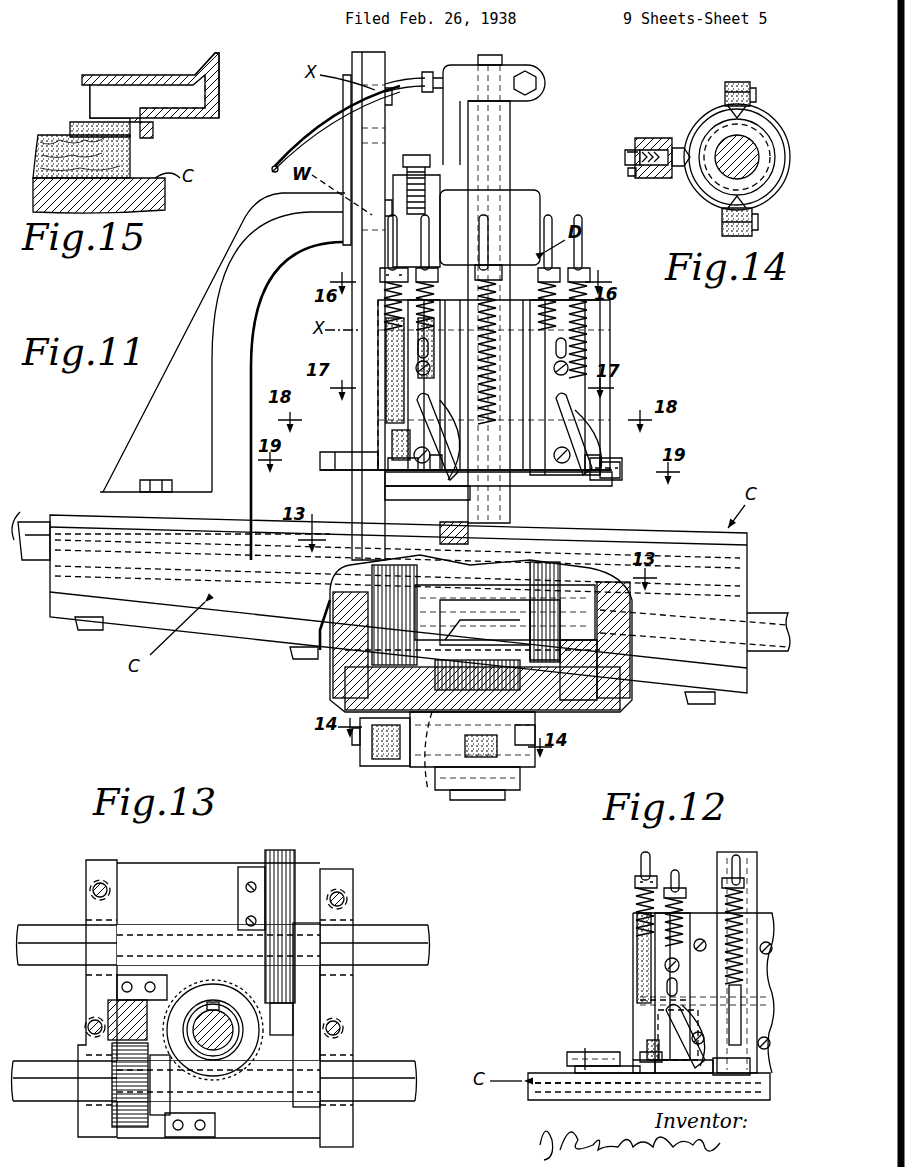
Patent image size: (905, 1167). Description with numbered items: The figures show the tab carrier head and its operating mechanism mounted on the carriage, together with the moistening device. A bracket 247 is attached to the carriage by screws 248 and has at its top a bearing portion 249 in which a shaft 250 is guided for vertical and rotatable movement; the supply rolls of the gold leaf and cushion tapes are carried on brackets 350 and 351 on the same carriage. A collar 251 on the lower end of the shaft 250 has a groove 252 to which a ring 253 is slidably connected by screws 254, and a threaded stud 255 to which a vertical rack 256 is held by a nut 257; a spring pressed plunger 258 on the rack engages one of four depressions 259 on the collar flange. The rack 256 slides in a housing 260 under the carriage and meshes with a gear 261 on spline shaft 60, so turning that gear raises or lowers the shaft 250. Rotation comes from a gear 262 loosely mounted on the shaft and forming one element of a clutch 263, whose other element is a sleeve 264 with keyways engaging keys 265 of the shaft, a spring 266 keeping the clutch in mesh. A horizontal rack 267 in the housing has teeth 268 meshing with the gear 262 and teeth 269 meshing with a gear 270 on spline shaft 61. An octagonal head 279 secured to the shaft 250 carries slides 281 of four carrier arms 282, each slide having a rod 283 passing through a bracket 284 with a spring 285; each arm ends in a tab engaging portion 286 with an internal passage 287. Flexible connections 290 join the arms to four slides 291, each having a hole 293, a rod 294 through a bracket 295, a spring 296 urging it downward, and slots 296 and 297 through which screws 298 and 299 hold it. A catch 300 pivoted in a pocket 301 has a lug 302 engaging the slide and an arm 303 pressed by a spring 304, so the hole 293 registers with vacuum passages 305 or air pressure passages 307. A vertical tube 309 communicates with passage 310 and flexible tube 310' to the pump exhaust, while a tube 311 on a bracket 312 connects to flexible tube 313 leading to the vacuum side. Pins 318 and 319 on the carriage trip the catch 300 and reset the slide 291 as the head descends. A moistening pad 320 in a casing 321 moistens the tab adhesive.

In FIG. 11, the spline shaft 60 is at (770, 632).
In FIG. 13, the spline shaft 60 is at (382, 1080).
In FIG. 13, the spline shaft 61 is at (388, 946).
In FIG. 11, the bracket 247 is at (165, 400).
In FIG. 11, the screws 248 is at (170, 465).
In FIG. 11, the bearing portion 249 is at (526, 215).
In FIG. 14, the shaft 250 is at (742, 152).
In FIG. 11, the shaft 250 is at (508, 172).
In FIG. 13, the shaft 250 is at (216, 1052).
In FIG. 12, the shaft 250 is at (768, 850).
In FIG. 14, the collar 251 is at (718, 122).
In FIG. 11, the collar 251 is at (510, 778).
In FIG. 11, the groove 252 is at (535, 745).
In FIG. 14, the ring 253 is at (767, 205).
In FIG. 11, the ring 253 is at (455, 790).
In FIG. 14, the screws 254 is at (756, 96).
In FIG. 11, the screws 254 is at (490, 758).
In FIG. 14, the threaded stud 255 is at (625, 158).
In FIG. 11, the threaded stud 255 is at (362, 745).
In FIG. 14, the rack 256 is at (665, 176).
In FIG. 11, the rack 256 is at (392, 766).
In FIG. 13, the rack 256 is at (110, 1015).
In FIG. 14, the nut 257 is at (633, 175).
In FIG. 11, the nut 257 is at (360, 760).
In FIG. 14, the spring pressed plunger 258 is at (688, 148).
In FIG. 11, the spring pressed plunger 258 is at (415, 755).
In FIG. 14, the grooves or depressions 259 is at (735, 110).
In FIG. 11, the grooves or depressions 259 is at (425, 785).
In FIG. 11, the housing 260 is at (335, 660).
In FIG. 13, the housing 260 is at (92, 912).
In FIG. 11, the gear 261 is at (330, 640).
In FIG. 13, the gear 261 is at (128, 1060).
In FIG. 11, the gear 262 is at (590, 718).
In FIG. 13, the gear 262 is at (240, 990).
In FIG. 11, the clutch 263 is at (600, 696).
In FIG. 11, the sleeve 264 is at (612, 655).
In FIG. 11, the keys 265 is at (500, 565).
In FIG. 13, the keys 265 is at (207, 1005).
In FIG. 11, the spring 266 is at (612, 640).
In FIG. 11, the rack 267 is at (597, 708).
In FIG. 13, the rack 267 is at (270, 870).
In FIG. 11, the teeth 268 is at (592, 685).
In FIG. 13, the teeth 268 is at (278, 1020).
In FIG. 11, the teeth 269 is at (612, 672).
In FIG. 13, the teeth 269 is at (298, 882).
In FIG. 13, the gear 270 is at (265, 920).
In FIG. 11, the octagonal head 279 is at (590, 355).
In FIG. 12, the octagonal head 279 is at (774, 914).
In FIG. 11, the slides 281 is at (518, 476).
In FIG. 15, the carrier arms 282 is at (207, 62).
In FIG. 11, the carrier arms 282 is at (610, 466).
In FIG. 12, the carrier arms 282 is at (610, 1052).
In FIG. 11, the vertical rod 283 is at (488, 262).
In FIG. 12, the vertical rod 283 is at (640, 863).
In FIG. 11, the bracket 284 is at (498, 275).
In FIG. 12, the bracket 284 is at (636, 882).
In FIG. 11, the spring 285 is at (498, 302).
In FIG. 12, the spring 285 is at (640, 900).
In FIG. 15, the tab engaging portion 286 is at (110, 78).
In FIG. 11, the tab engaging portion 286 is at (625, 482).
In FIG. 12, the tab engaging portion 286 is at (568, 1058).
In FIG. 15, the passage 287 is at (175, 92).
In FIG. 11, the flexible connections 290 is at (602, 490).
In FIG. 11, the slides 291 is at (415, 345).
In FIG. 12, the slides 291 is at (662, 958).
In FIG. 11, the hole 293 is at (434, 388).
In FIG. 12, the hole 293 is at (668, 1015).
In FIG. 11, the rod 294 is at (424, 268).
In FIG. 12, the rod 294 is at (675, 868).
In FIG. 11, the bracket 295 is at (436, 275).
In FIG. 12, the bracket 295 is at (685, 880).
In FIG. 11, the spring 296 is at (410, 348).
In FIG. 12, the spring 296 is at (645, 927).
In FIG. 11, the slot 297 is at (395, 432).
In FIG. 11, the screw 298 is at (432, 360).
In FIG. 12, the screw 298 is at (665, 965).
In FIG. 11, the screw 299 is at (432, 425).
In FIG. 12, the screw 299 is at (690, 1040).
In FIG. 11, the catch 300 is at (420, 468).
In FIG. 11, the pocket 301 is at (390, 470).
In FIG. 11, the lug 302 is at (435, 468).
In FIG. 11, the arm 303 is at (400, 475).
In FIG. 12, the arm 303 is at (655, 1062).
In FIG. 11, the spring 304 is at (395, 446).
In FIG. 12, the spring 304 is at (648, 1045).
In FIG. 12, the upper passages 305 is at (640, 992).
In FIG. 12, the passages 307 is at (655, 1022).
In FIG. 11, the vertical tube 309 is at (455, 524).
In FIG. 12, the vertical tube 309 is at (708, 1080).
In FIG. 11, the passage 310 is at (192, 518).
In FIG. 12, the passage 310 is at (568, 1064).
In FIG. 11, the flexible tube 310' is at (38, 518).
In FIG. 11, the tube 311 is at (505, 104).
In FIG. 11, the bracket 312 is at (452, 130).
In FIG. 11, the flexible tube 313 is at (322, 124).
In FIG. 11, the vertical pin 318 is at (445, 500).
In FIG. 12, the vertical pin 318 is at (640, 1075).
In FIG. 11, the vertical pin 319 is at (605, 487).
In FIG. 12, the vertical pin 319 is at (668, 1080).
In FIG. 15, the moistening pad 320 is at (82, 124).
In FIG. 15, the casing 321 is at (128, 160).
In FIG. 11, the bracket 350 is at (345, 165).
In FIG. 11, the bracket 351 is at (352, 228).